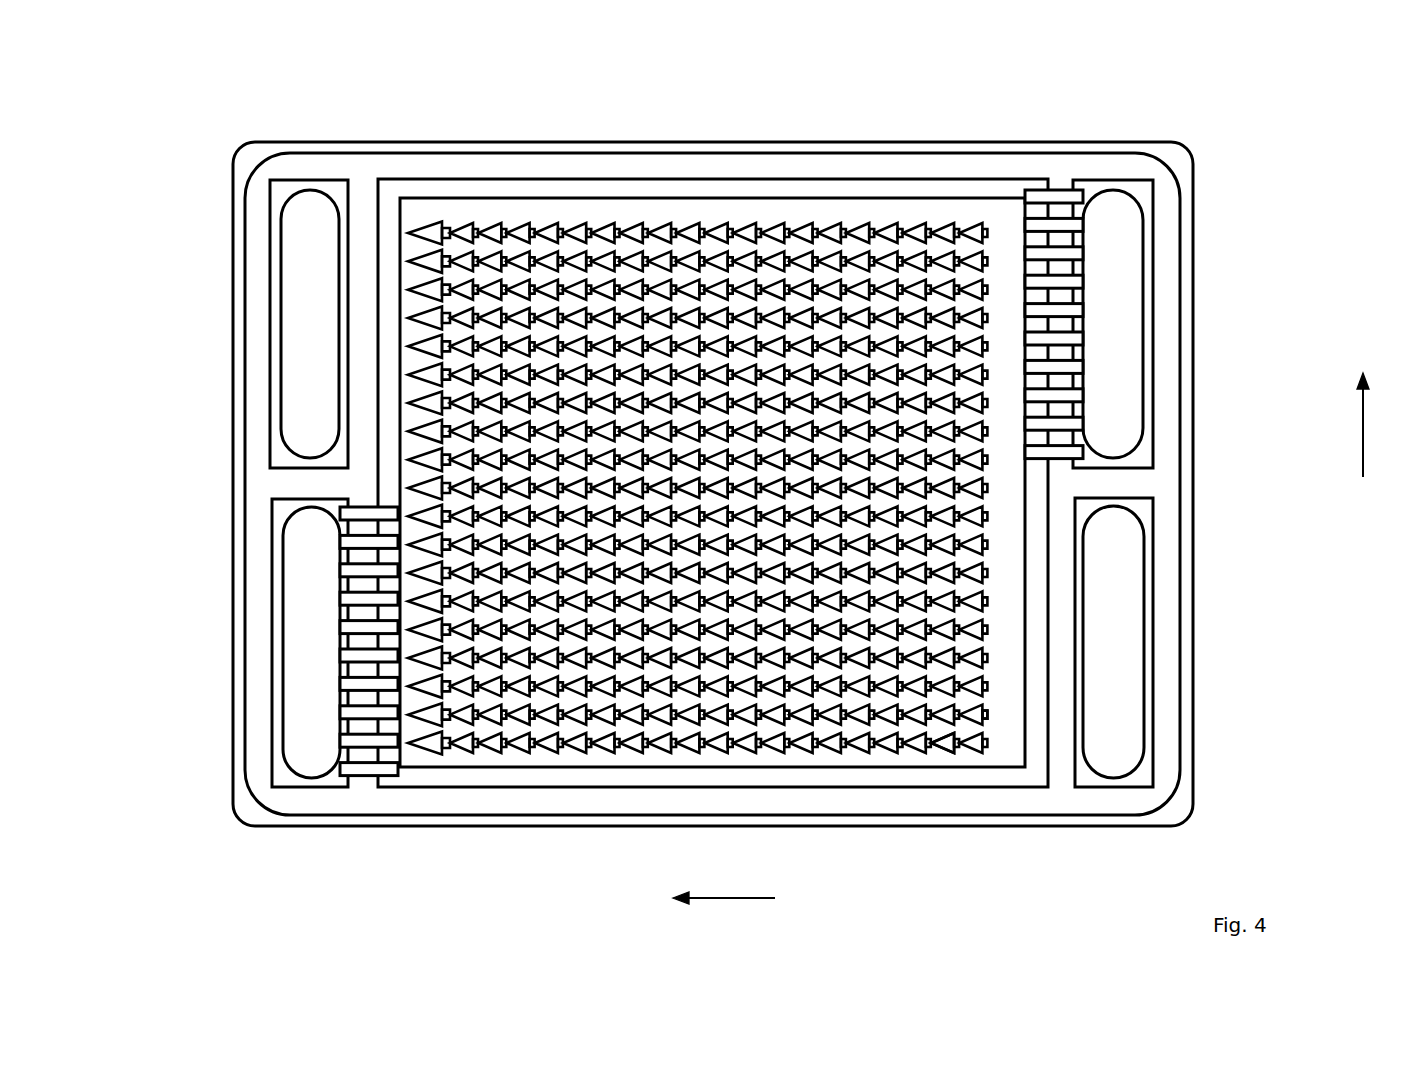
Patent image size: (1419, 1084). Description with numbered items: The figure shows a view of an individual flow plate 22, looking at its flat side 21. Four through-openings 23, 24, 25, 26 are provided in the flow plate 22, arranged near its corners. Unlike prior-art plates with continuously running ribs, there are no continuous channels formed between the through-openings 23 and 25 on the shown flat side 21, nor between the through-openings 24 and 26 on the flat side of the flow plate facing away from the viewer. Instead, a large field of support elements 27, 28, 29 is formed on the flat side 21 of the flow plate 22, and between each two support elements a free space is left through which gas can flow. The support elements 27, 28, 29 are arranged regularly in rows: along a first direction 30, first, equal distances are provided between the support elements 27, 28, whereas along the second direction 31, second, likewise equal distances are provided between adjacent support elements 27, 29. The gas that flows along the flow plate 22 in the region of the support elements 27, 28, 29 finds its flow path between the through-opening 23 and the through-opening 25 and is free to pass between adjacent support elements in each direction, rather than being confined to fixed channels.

The flat side 21 is at (838, 162).
The flow plate 22 is at (1185, 420).
The through-opening 23 is at (300, 667).
The through-opening 24 is at (1122, 635).
The through-opening 25 is at (1115, 330).
The through-opening 26 is at (300, 320).
The support element 27 is at (978, 743).
The support element 28 is at (955, 746).
The support element 29 is at (981, 709).
The first direction 30 is at (748, 900).
The second direction 31 is at (1362, 445).